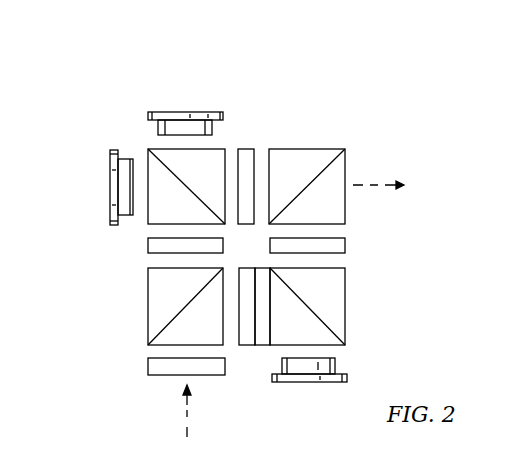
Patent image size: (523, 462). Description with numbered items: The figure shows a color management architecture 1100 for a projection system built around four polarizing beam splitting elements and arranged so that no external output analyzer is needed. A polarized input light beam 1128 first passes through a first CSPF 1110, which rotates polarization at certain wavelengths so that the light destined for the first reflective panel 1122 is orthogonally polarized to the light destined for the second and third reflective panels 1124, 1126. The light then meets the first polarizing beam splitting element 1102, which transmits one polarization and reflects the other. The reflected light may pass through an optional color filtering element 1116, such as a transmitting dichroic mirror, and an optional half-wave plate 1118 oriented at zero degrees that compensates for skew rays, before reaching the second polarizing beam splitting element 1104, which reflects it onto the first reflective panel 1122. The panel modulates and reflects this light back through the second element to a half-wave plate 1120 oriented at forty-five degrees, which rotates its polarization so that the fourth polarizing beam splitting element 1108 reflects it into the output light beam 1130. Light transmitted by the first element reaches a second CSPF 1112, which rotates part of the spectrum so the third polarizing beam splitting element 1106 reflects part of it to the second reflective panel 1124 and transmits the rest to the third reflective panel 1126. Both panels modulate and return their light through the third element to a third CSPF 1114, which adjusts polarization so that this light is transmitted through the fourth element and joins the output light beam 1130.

The color management architecture 1100 is at (302, 87).
The first polarizing beam splitting element 1102 is at (148, 306).
The second polarizing beam splitting element 1104 is at (345, 302).
The third polarizing beam splitting element 1106 is at (155, 149).
The fourth polarizing beam splitting element 1108 is at (308, 148).
The first CSPF 1110 is at (148, 367).
The second CSPF 1112 is at (148, 243).
The third CSPF 1114 is at (242, 148).
The color filtering element 1116 is at (248, 345).
The half-wave plate oriented at 0° 1118 is at (262, 345).
The half-wave plate oriented at 45° 1120 is at (345, 246).
The first reflective panel 1122 is at (305, 382).
The second reflective panel 1124 is at (110, 188).
The third reflective panel 1126 is at (170, 111).
The polarized input light beam 1128 is at (186, 412).
The output light beam 1130 is at (374, 185).